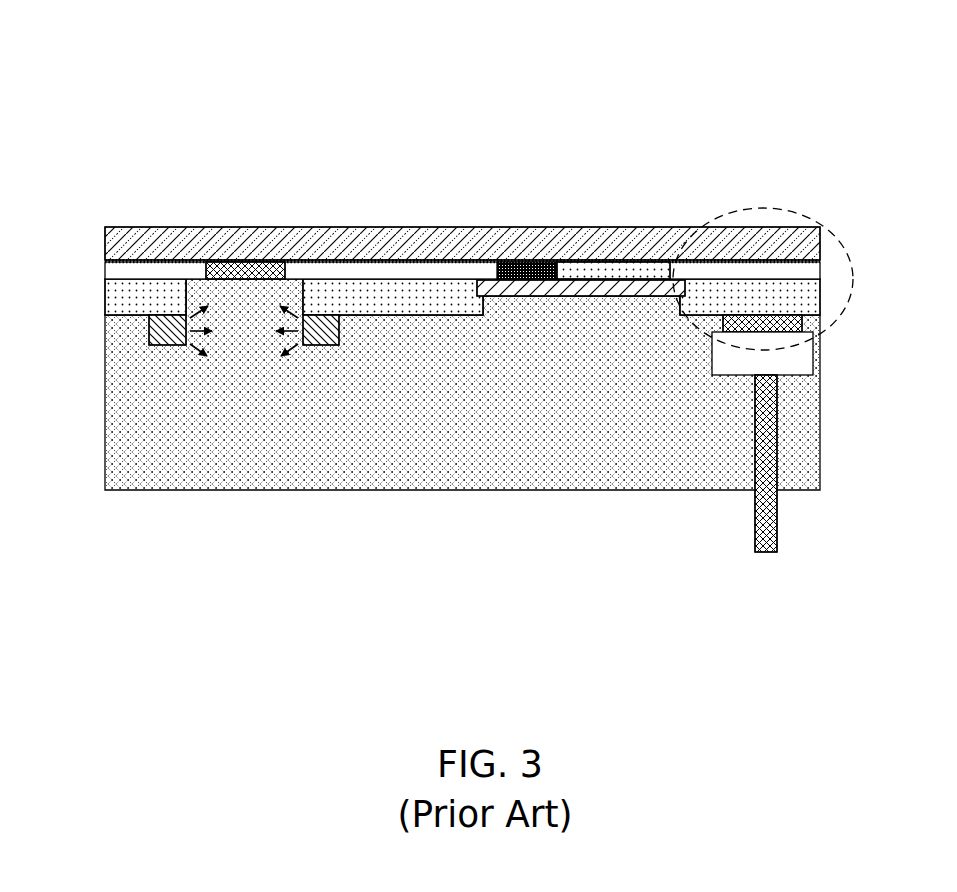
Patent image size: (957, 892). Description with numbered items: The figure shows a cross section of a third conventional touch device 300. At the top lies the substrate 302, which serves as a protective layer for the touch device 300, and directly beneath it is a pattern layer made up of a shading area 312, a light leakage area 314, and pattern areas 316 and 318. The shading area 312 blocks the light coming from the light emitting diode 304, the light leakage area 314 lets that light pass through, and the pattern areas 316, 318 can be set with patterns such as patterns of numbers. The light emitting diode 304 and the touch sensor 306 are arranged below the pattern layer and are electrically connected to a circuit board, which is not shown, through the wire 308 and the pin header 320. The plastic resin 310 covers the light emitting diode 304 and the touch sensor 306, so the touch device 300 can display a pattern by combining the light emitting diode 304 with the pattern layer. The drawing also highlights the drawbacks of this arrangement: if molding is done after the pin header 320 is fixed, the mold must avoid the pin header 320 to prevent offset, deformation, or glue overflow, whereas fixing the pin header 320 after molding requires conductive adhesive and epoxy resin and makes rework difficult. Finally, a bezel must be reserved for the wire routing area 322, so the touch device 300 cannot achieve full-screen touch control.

The touch device 300 is at (478, 305).
The substrate 302 is at (808, 244).
The light emitting diode 304 is at (170, 341).
The touch sensor 306 is at (577, 298).
The wire 308 is at (112, 301).
The plastic resin 310 is at (808, 425).
The shading area 312 is at (112, 272).
The light leakage area 314 is at (247, 270).
The pattern area 316 is at (523, 268).
The pattern area 318 is at (620, 268).
The pin header 320 is at (777, 533).
The wire routing area 322 is at (762, 207).